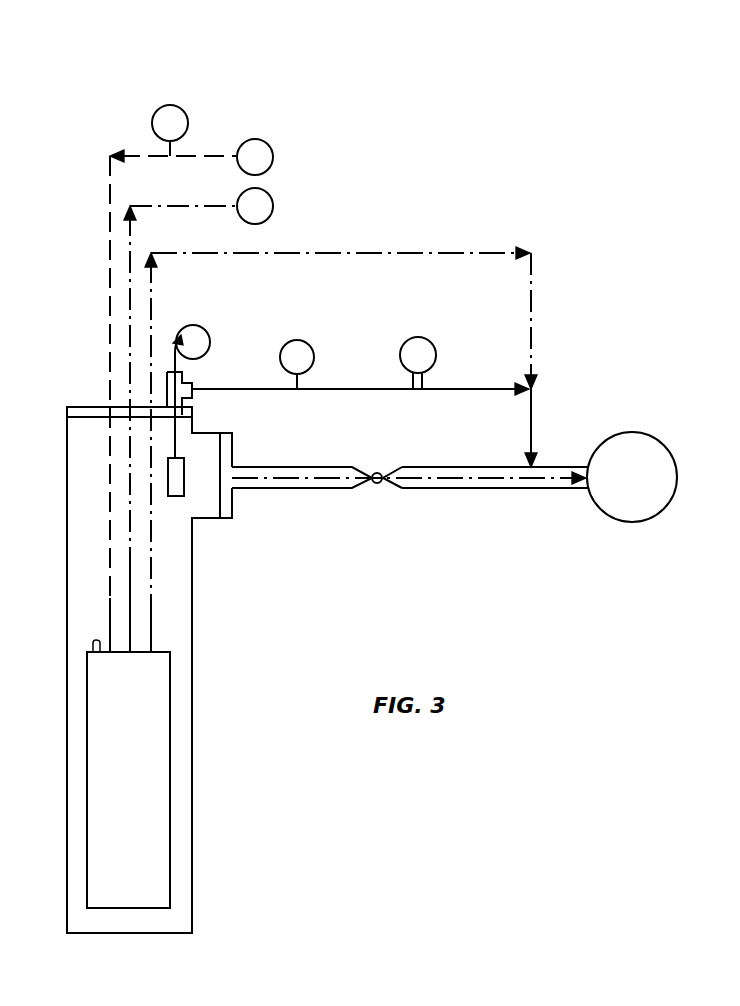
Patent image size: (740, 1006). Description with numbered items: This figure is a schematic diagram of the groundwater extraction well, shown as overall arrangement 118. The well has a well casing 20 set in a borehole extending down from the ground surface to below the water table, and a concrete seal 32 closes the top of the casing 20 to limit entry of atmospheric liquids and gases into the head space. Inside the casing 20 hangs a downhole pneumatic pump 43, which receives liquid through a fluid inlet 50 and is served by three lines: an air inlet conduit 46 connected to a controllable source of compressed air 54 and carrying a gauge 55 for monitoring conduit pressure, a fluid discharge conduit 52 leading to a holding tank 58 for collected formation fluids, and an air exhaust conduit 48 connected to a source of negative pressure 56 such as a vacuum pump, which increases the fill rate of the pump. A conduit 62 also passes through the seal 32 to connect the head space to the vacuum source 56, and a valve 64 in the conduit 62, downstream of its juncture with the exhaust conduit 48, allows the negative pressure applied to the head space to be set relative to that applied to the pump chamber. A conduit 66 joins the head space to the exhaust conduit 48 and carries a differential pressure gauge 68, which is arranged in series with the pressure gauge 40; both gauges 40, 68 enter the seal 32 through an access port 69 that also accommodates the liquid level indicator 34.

The well casing 20 is at (197, 633).
The concrete seal 32 is at (85, 410).
The liquid level indicator 34 is at (193, 325).
The pressure gauge 40 is at (297, 340).
The container 43 is at (178, 783).
The air inlet conduit 46 is at (114, 150).
The air exhaust conduit 48 is at (428, 253).
The fluid inlet 50 is at (95, 640).
The fluid discharge conduit 52 is at (145, 206).
The source of compressed air 54 is at (273, 157).
The gauge 55 is at (170, 105).
The source of negative pressure 56 is at (635, 432).
The holding tank 58 is at (273, 206).
The conduit 62 is at (515, 488).
The valve 64 is at (377, 490).
The conduit 66 is at (352, 389).
The differential pressure gauge 68 is at (418, 337).
The access port 69 is at (184, 385).
The system 118 is at (574, 235).